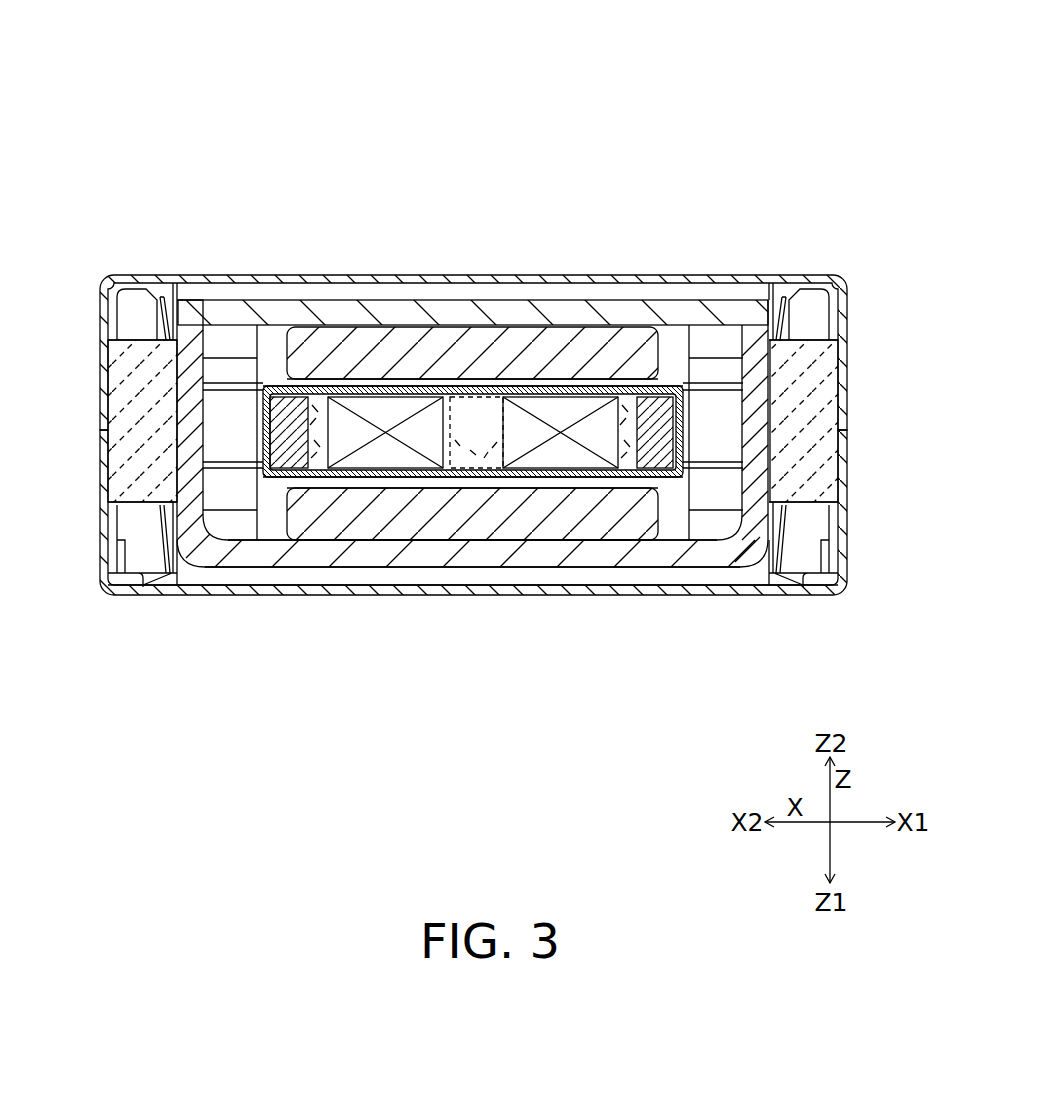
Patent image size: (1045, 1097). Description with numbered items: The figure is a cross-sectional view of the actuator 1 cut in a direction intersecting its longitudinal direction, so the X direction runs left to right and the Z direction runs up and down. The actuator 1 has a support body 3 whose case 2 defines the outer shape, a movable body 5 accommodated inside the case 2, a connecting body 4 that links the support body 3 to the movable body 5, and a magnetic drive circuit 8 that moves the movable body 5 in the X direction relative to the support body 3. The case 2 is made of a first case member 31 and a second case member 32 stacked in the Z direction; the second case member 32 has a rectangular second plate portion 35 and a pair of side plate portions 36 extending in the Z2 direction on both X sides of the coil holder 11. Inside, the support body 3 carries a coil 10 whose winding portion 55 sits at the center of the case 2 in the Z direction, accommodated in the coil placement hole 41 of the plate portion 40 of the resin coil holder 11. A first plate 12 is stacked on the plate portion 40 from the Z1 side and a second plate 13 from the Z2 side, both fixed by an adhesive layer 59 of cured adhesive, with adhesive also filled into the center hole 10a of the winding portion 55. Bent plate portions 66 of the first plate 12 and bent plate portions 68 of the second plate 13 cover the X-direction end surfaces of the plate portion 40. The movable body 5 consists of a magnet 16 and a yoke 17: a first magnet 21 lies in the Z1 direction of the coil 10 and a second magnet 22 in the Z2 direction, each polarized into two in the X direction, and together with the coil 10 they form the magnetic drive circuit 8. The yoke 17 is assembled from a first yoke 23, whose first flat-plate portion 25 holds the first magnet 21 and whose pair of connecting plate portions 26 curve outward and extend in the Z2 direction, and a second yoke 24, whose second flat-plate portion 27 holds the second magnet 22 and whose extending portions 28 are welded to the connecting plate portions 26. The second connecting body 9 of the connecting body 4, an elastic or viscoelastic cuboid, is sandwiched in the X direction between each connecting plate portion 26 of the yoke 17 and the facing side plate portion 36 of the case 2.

The actuator 1 is at (218, 124).
The case 2 is at (728, 682).
The support body 3 is at (176, 606).
The connecting body 4 is at (473, 421).
The movable body 5 is at (290, 290).
The magnetic drive circuit 8 is at (525, 132).
The second connecting body 9 is at (130, 400).
The coil 10 is at (479, 425).
The center hole 10a is at (490, 455).
The coil holder 11 is at (473, 444).
The first plate 12 is at (470, 470).
The second plate 13 is at (472, 386).
The magnet 16 is at (498, 177).
The yoke 17 is at (378, 177).
The first magnet 21 is at (550, 513).
The second magnet 22 is at (515, 337).
The first yoke 23 is at (443, 383).
The second yoke 24 is at (408, 312).
The first flat-plate portion 25 is at (393, 556).
The connecting plate portions 26 is at (185, 432).
The second flat-plate portion 27 is at (352, 315).
The extending portions 28 is at (192, 313).
The first case member 31 is at (710, 590).
The second case member 32 is at (623, 593).
The second plate portion 35 is at (720, 283).
The side plate portions 36 is at (100, 515).
The plate portion 40 is at (288, 468).
The coil placement hole 41 is at (630, 410).
The winding portion 55 is at (606, 410).
The adhesive layer 59 is at (492, 433).
The bent plate portions 66 is at (258, 440).
The bent plate portions 68 is at (257, 415).